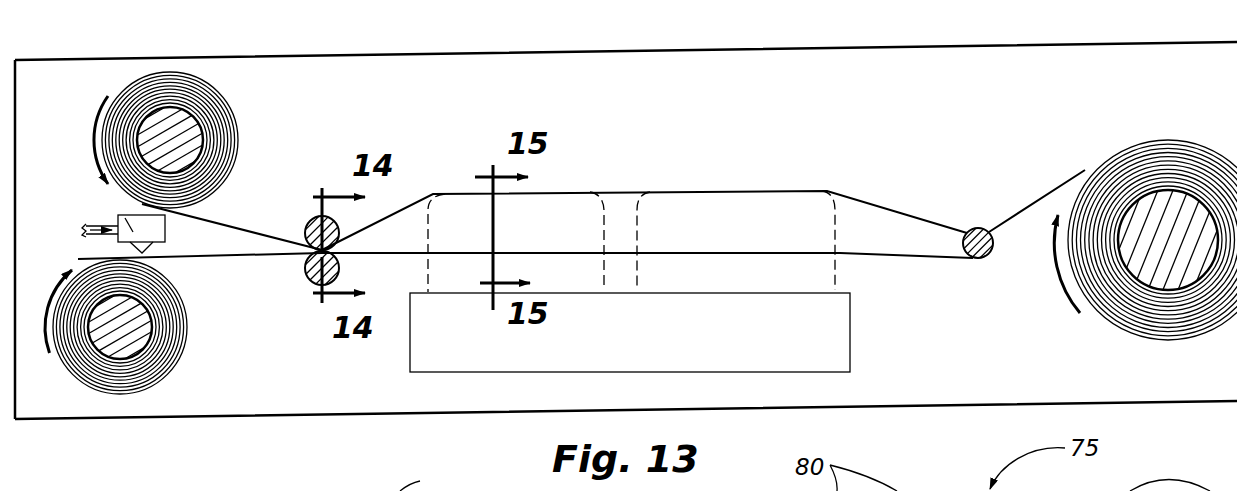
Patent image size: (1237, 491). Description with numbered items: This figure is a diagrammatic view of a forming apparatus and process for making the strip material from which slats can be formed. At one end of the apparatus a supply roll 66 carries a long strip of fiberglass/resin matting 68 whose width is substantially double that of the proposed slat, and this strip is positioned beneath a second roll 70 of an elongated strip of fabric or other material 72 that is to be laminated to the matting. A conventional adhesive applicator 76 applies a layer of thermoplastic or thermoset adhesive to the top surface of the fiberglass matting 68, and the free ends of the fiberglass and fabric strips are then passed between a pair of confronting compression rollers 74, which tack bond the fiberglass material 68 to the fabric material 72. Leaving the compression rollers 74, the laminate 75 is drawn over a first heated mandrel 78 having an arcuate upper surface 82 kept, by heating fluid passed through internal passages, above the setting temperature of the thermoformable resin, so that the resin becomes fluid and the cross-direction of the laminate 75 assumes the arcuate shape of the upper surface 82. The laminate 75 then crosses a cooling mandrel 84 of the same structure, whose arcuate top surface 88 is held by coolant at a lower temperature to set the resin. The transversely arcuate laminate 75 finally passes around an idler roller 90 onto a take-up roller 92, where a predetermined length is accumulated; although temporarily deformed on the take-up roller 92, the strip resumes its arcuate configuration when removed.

The supply roll 66 is at (72, 380).
The fiberglass/resin matting 68 is at (206, 257).
The second roll 70 is at (240, 93).
The fabric material 72 is at (225, 225).
The compression rollers 74 is at (308, 223).
The laminate 75 is at (387, 242).
The adhesive applicator 76 is at (118, 215).
The heated mandrel 78 is at (550, 210).
The arcuate upper surface 82 is at (463, 213).
The cooling mandrel 84 is at (783, 214).
The arcuate top surface 88 is at (692, 215).
The idler roller 90 is at (988, 260).
The take-up roller 92 is at (1150, 346).